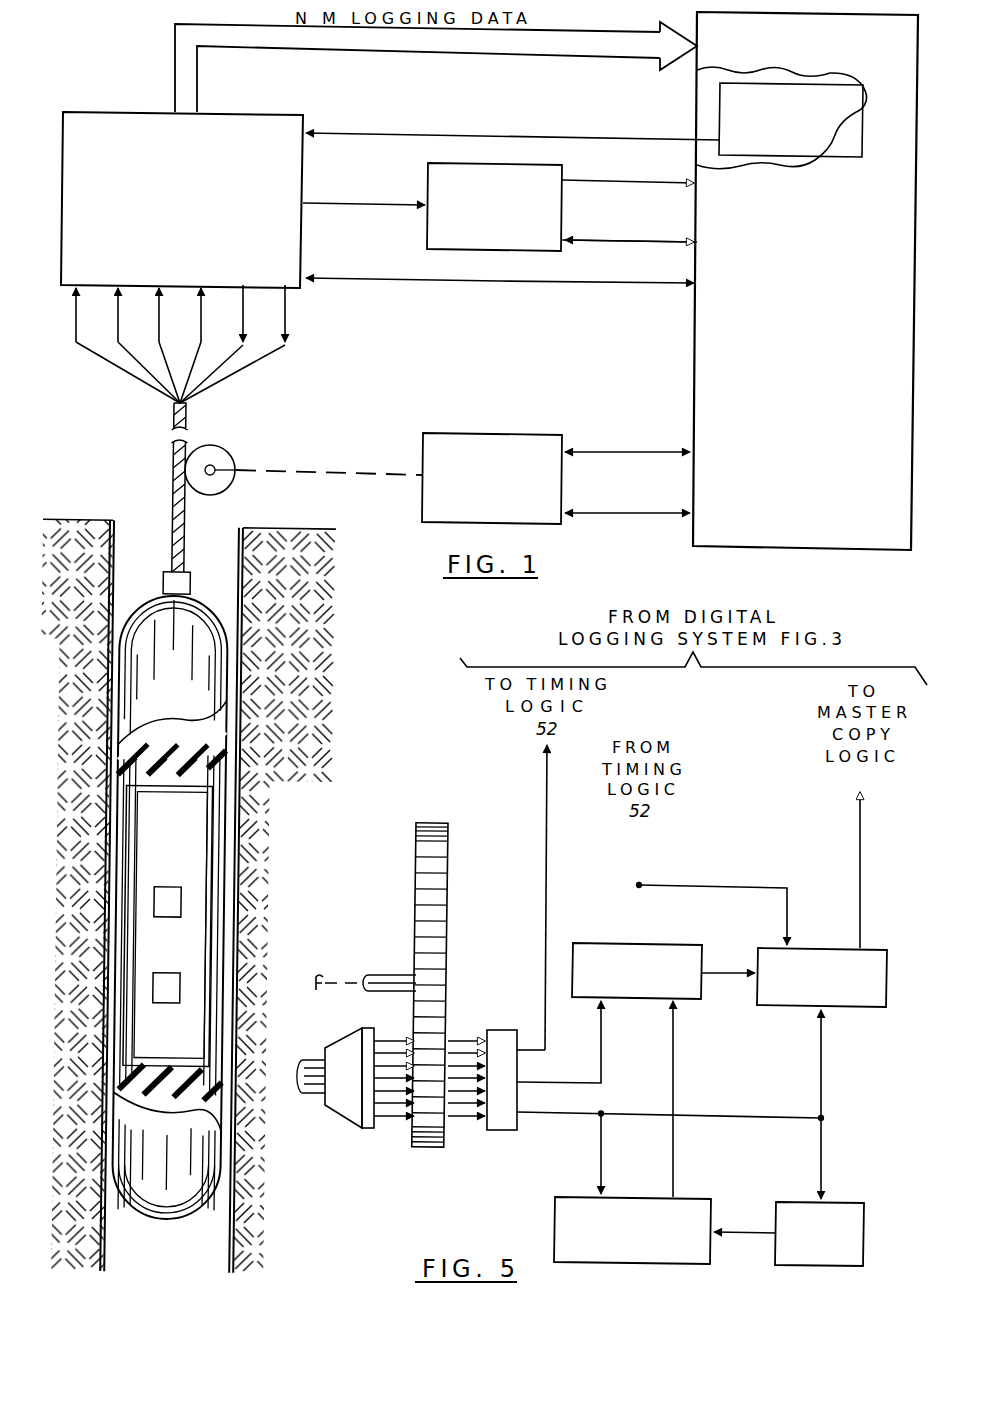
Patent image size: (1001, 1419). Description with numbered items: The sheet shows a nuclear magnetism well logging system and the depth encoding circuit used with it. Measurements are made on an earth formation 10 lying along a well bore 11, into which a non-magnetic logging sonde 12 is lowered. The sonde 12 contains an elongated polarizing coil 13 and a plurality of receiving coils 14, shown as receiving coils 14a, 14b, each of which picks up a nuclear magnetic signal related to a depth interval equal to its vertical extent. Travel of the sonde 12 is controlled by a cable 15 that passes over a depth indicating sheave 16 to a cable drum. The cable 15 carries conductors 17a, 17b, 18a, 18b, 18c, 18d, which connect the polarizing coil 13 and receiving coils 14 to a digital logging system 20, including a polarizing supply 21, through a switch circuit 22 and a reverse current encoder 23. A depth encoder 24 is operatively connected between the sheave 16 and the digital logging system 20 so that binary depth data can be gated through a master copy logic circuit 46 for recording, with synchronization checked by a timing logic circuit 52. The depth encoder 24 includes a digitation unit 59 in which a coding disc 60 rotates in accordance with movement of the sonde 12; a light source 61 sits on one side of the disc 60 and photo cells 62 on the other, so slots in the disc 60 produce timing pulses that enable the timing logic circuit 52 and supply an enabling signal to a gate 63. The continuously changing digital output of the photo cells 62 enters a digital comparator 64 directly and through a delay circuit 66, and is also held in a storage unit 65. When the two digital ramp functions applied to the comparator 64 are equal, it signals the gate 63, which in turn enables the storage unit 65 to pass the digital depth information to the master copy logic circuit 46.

In FIG. 1, the earth formation 10 is at (84, 608).
In FIG. 1, the well bore 11 is at (218, 553).
In FIG. 1, the non-magnetic logging sonde 12 is at (195, 655).
In FIG. 1, the polarizing coil 13 is at (215, 805).
In FIG. 1, the receiving coils 14 is at (152, 986).
In FIG. 1, the receiving coil 14a is at (167, 887).
In FIG. 1, the receiving coil 14b is at (152, 973).
In FIG. 1, the cable 15 is at (170, 505).
In FIG. 1, the depth indicating sheave 16 is at (236, 460).
In FIG. 1, the conductor 17a is at (245, 308).
In FIG. 1, the conductor 17b is at (297, 298).
In FIG. 1, the conductor 18a is at (80, 352).
In FIG. 1, the conductor 18b is at (122, 352).
In FIG. 1, the conductor 18c is at (160, 352).
In FIG. 1, the conductor 18d is at (203, 352).
In FIG. 1, the digital logging system 20 is at (816, 322).
In FIG. 1, the polarizing supply 21 is at (790, 158).
In FIG. 1, the switch circuit 22 is at (123, 112).
In FIG. 1, the reverse current encoder 23 is at (428, 180).
In FIG. 1, the depth encoder 24 is at (495, 433).
In FIG. 5, the depth encoder 24 is at (724, 846).
In FIG. 5, the master copy logic circuit 46 is at (859, 857).
In FIG. 5, the timing logic circuit 52 is at (639, 940).
In FIG. 5, the digitation unit 59 is at (420, 1174).
In FIG. 5, the coding disc 60 is at (418, 890).
In FIG. 5, the light source 61 is at (346, 1130).
In FIG. 5, the photo cells 62 is at (500, 1130).
In FIG. 5, the gate 63 is at (610, 943).
In FIG. 5, the digital comparator 64 is at (692, 1197).
In FIG. 5, the storage unit 65 is at (850, 1005).
In FIG. 5, the delay circuit 66 is at (843, 1202).